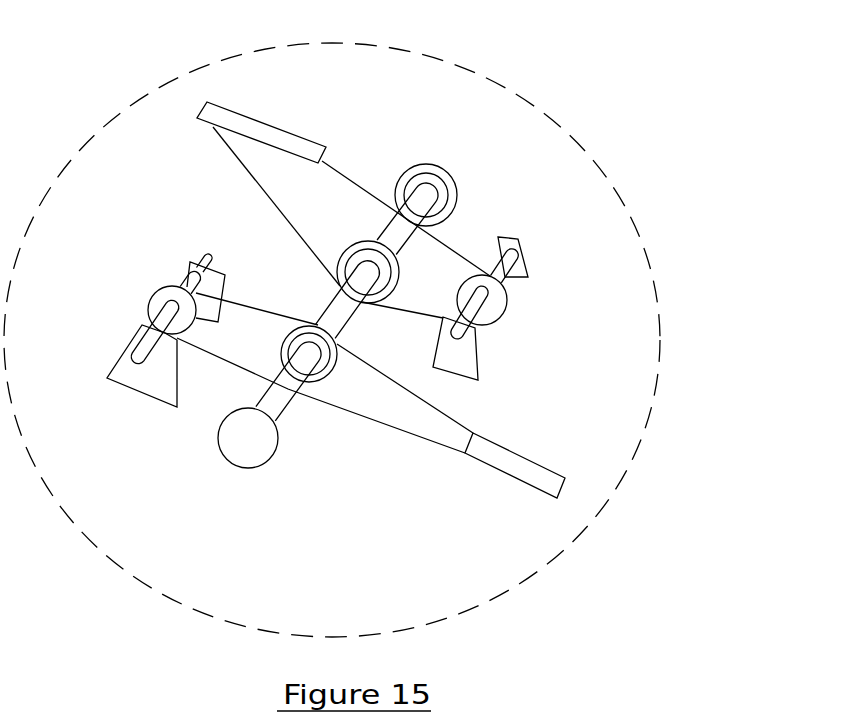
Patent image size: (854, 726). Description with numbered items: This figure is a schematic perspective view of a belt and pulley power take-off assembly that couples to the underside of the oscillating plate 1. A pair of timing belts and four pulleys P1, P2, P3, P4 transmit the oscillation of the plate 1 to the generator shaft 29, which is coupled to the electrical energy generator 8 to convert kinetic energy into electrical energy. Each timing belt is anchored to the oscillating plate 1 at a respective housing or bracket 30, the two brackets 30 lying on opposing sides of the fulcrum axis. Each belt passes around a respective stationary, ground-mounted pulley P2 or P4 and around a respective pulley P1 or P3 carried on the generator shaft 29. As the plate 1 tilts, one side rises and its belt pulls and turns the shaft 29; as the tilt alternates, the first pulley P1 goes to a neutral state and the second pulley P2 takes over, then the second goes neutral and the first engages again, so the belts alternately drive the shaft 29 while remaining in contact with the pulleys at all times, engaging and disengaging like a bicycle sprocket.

The oscillating plate 1 is at (662, 298).
The electrical energy generator 8 is at (243, 450).
The generator shaft 29 is at (264, 393).
The housing 30 is at (233, 110).
The first pulley P1 is at (375, 316).
The second pulley P2 is at (518, 292).
The pulley on generator shaft P3 is at (332, 390).
The stationary pulley P4 is at (152, 300).